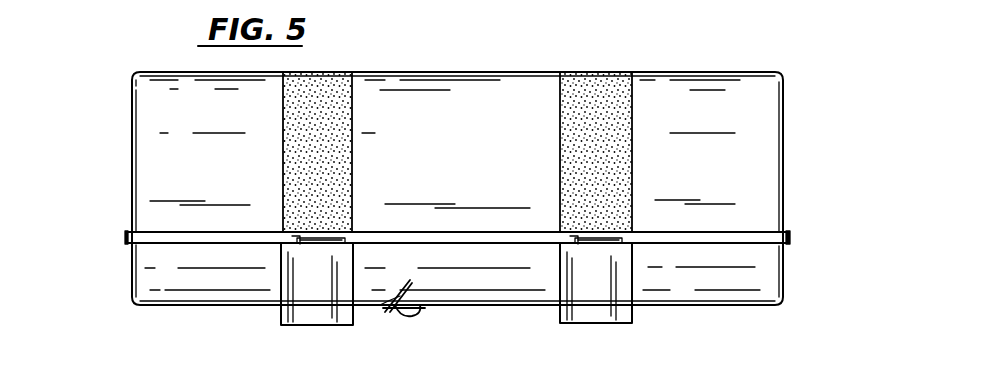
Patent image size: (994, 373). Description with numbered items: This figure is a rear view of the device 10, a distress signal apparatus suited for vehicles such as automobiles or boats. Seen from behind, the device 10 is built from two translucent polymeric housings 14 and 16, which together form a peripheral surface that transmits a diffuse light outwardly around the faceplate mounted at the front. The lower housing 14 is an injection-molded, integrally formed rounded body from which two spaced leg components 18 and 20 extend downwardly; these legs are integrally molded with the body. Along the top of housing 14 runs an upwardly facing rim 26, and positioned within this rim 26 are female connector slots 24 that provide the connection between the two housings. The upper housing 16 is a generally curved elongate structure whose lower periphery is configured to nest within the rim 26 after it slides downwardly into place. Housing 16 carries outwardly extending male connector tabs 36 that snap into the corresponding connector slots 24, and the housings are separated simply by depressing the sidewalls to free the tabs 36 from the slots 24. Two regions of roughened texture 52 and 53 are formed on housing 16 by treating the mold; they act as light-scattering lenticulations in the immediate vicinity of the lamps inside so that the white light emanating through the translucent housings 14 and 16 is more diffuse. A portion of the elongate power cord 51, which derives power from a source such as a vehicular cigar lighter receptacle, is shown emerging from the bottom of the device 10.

The device 10 is at (792, 9).
The housing 14 is at (783, 278).
The housing 16 is at (783, 152).
The leg component 18 is at (612, 313).
The leg component 20 is at (330, 316).
The female connector slot 24 is at (293, 240).
The rim 26 is at (787, 237).
The male connector tab 36 is at (330, 239).
The cord 51 is at (417, 315).
The region of roughened texture 52 is at (322, 80).
The region of roughened texture 53 is at (590, 80).